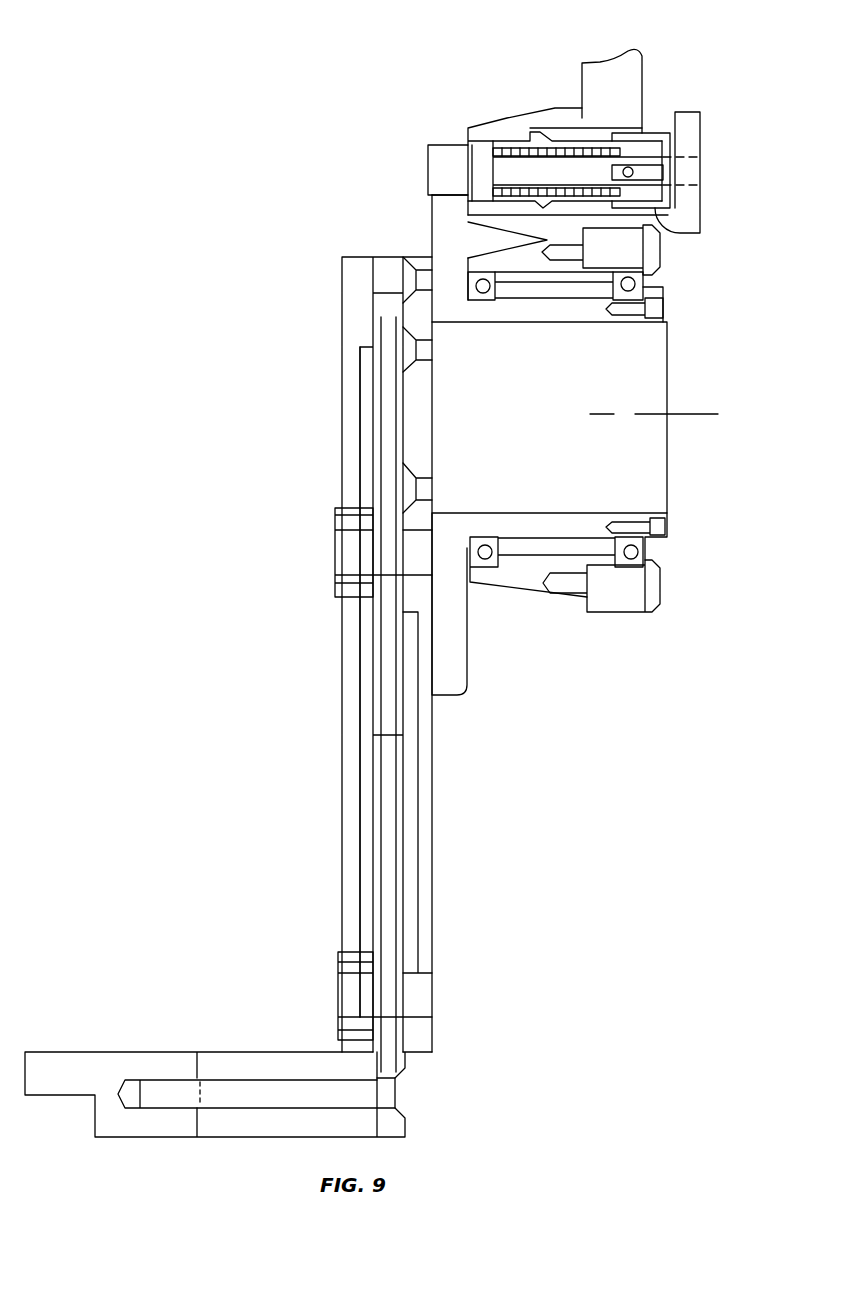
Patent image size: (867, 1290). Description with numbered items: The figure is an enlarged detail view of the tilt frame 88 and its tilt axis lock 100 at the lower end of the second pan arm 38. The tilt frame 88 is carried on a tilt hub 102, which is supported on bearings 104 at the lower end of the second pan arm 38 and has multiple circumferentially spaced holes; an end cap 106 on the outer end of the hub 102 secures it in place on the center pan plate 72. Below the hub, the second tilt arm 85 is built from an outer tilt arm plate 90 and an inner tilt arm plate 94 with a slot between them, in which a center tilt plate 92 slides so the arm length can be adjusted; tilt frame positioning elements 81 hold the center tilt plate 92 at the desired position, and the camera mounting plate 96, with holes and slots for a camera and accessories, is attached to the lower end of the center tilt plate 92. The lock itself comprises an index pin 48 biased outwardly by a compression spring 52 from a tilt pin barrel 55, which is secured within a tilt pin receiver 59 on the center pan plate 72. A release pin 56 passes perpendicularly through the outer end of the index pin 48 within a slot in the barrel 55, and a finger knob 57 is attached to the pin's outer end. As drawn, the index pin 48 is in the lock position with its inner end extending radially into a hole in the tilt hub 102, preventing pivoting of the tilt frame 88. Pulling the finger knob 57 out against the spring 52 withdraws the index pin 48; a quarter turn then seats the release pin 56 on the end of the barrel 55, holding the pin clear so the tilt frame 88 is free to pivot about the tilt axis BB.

The second pan arm 38 is at (651, 88).
The index pin 48 is at (440, 170).
The compression spring 52 is at (492, 152).
The tilt pin barrel 55 is at (654, 150).
The release pin 56 is at (634, 176).
The finger knob 57 is at (688, 135).
The tilt pin receiver 59 is at (533, 117).
The center pan plate 72 is at (597, 82).
The tilt frame positioning elements 81 is at (335, 583).
The second tilt arm 85 is at (434, 821).
The tilt frame 88 is at (338, 785).
The outer tilt arm plate 90 is at (427, 856).
The center tilt plate 92 is at (395, 930).
The inner tilt arm plate 94 is at (345, 898).
The camera mounting plate 96 is at (122, 1060).
The tilt axis lock 100 is at (706, 100).
The tilt hub 102 is at (432, 220).
The bearings 104 is at (490, 560).
The end cap 106 is at (650, 540).
The tilt axis BB is at (672, 415).